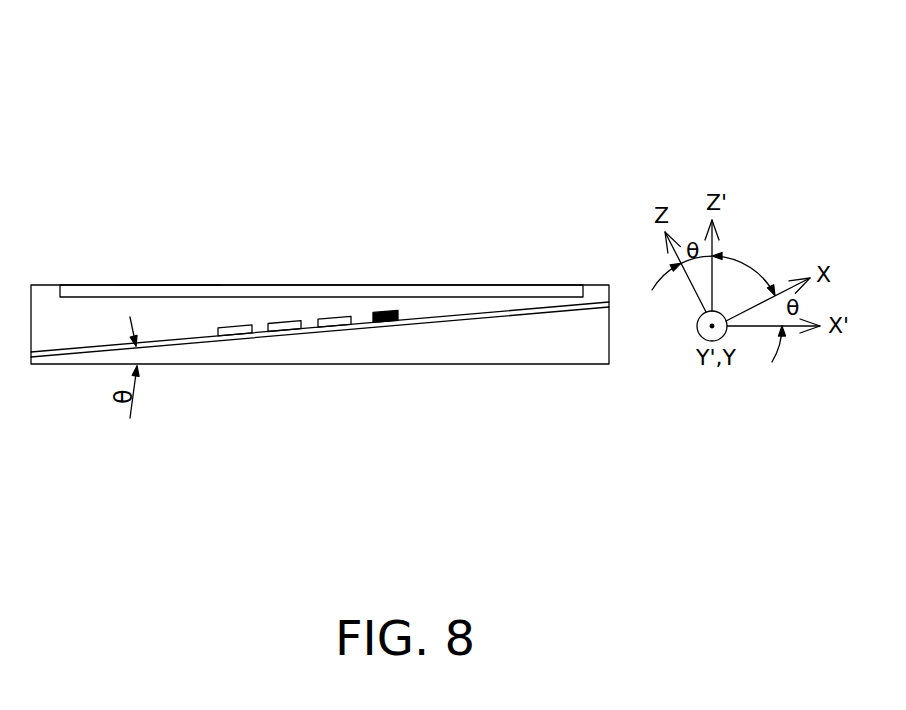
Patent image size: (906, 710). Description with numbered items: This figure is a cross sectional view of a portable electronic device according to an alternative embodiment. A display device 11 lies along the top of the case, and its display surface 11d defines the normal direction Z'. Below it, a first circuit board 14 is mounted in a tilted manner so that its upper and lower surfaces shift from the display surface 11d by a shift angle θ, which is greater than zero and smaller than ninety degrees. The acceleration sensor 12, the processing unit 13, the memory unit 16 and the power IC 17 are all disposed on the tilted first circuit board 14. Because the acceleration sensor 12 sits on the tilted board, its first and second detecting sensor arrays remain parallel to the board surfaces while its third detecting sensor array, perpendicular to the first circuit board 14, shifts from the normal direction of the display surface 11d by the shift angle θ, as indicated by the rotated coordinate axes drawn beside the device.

The display device 11 is at (105, 285).
The display surface 11d is at (170, 285).
The acceleration sensor 12 is at (395, 312).
The processing unit 13 is at (243, 327).
The first circuit board 14 is at (62, 357).
The memory unit 16 is at (292, 322).
The power IC 17 is at (338, 318).